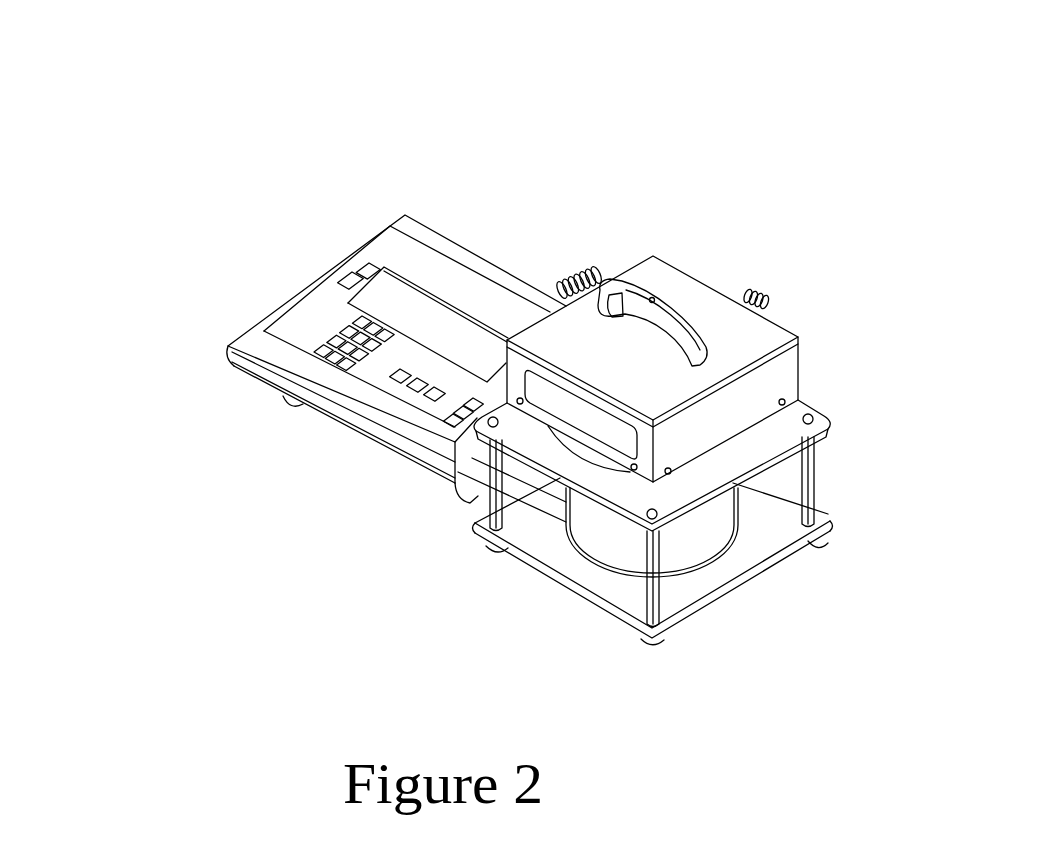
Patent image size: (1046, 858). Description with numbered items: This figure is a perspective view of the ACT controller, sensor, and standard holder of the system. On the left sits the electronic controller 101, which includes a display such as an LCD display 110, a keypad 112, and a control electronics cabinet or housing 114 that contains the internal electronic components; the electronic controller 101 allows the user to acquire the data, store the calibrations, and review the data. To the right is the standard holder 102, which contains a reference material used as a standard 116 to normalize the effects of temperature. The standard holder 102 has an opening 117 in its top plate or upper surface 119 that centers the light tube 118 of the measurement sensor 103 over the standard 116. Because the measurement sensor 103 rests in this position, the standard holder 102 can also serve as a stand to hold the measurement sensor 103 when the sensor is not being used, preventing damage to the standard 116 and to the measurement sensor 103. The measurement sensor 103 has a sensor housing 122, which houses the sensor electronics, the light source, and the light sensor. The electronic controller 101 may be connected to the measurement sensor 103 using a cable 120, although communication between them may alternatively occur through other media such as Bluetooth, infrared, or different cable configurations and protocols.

The electronic controller 101 is at (500, 333).
The standard holder 102 is at (653, 561).
The measurement sensor 103 is at (712, 268).
The LCD display 110 is at (315, 333).
The keypad 112 is at (266, 291).
The control electronics cabinet or housing 114 is at (315, 368).
The standard 116 is at (575, 566).
The opening 117 is at (705, 434).
The light tube 118 is at (707, 528).
The top plate or upper surface 119 is at (861, 410).
The cable 120 is at (504, 231).
The sensor housing 122 is at (701, 326).